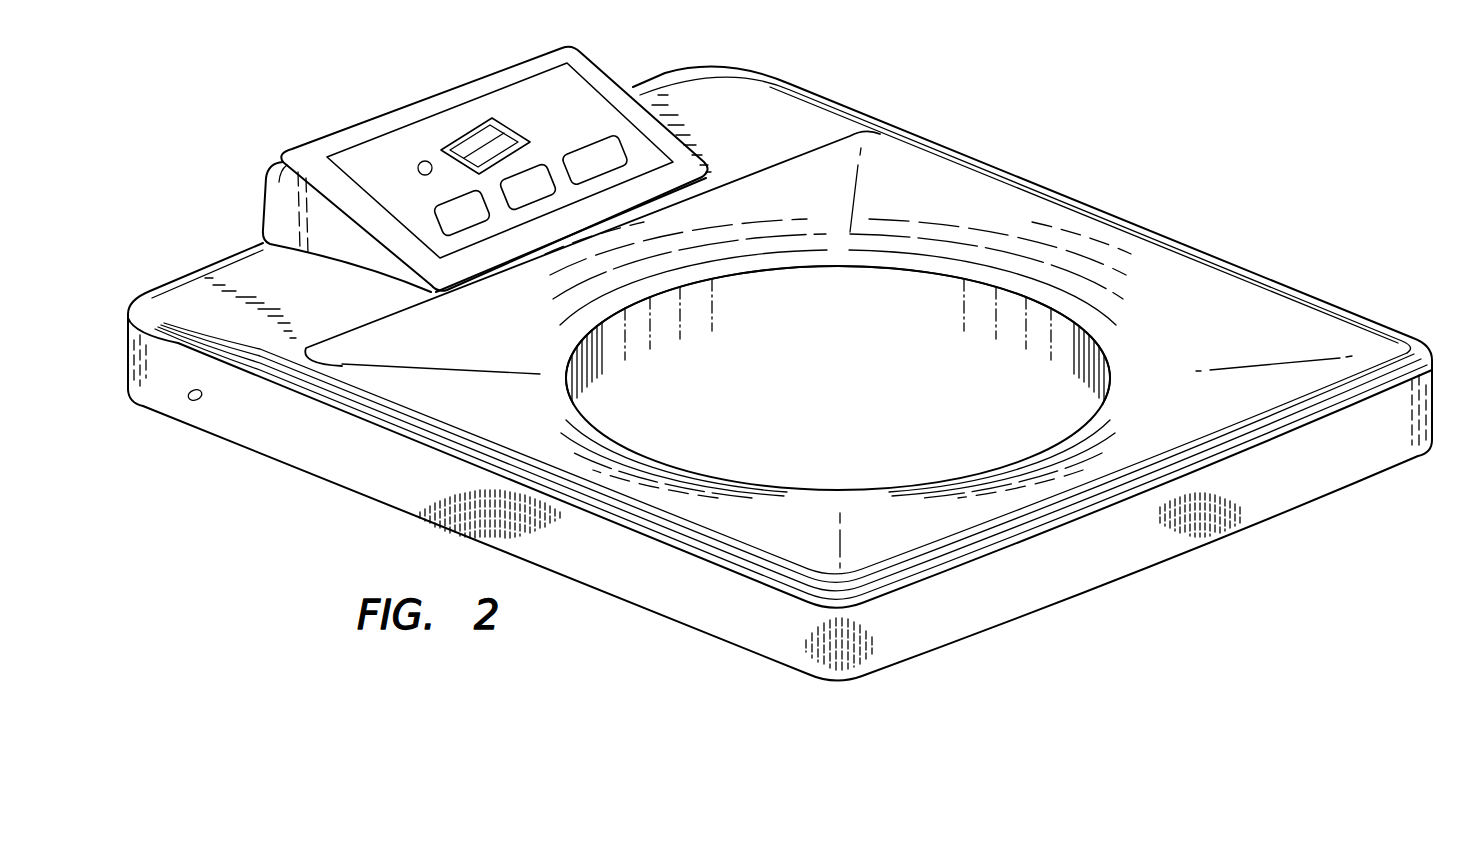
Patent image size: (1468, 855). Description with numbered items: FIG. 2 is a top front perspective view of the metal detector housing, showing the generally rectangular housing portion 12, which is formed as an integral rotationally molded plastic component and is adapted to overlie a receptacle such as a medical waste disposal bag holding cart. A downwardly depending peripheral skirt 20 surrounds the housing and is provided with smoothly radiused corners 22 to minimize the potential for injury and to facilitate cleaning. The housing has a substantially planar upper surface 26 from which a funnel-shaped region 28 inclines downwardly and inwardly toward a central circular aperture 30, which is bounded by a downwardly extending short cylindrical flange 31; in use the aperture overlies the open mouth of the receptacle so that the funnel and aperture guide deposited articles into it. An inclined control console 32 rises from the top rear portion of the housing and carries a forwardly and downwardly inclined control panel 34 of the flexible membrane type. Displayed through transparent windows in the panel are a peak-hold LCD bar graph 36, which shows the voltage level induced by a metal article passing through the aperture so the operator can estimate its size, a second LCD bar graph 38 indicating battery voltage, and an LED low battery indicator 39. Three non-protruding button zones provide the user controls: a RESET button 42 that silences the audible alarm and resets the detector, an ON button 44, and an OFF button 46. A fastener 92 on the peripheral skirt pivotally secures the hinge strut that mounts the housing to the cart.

The housing portion 12 is at (1199, 598).
The peripheral skirt 20 is at (1303, 470).
The radiused corners 22 is at (840, 647).
The upper surface 26 is at (1113, 223).
The funnel-shaped region 28 is at (1180, 323).
The central circular aperture 30 is at (899, 352).
The cylindrical flange 31 is at (722, 307).
The control console 32 is at (288, 200).
The control panel 34 is at (360, 153).
The LCD bar graph 36 is at (474, 137).
The LCD bar graph 38 is at (507, 147).
The LED low battery indicator 39 is at (422, 162).
The RESET button 42 is at (627, 158).
The ON button 44 is at (456, 232).
The OFF button 46 is at (545, 184).
The fastener 92 is at (192, 397).